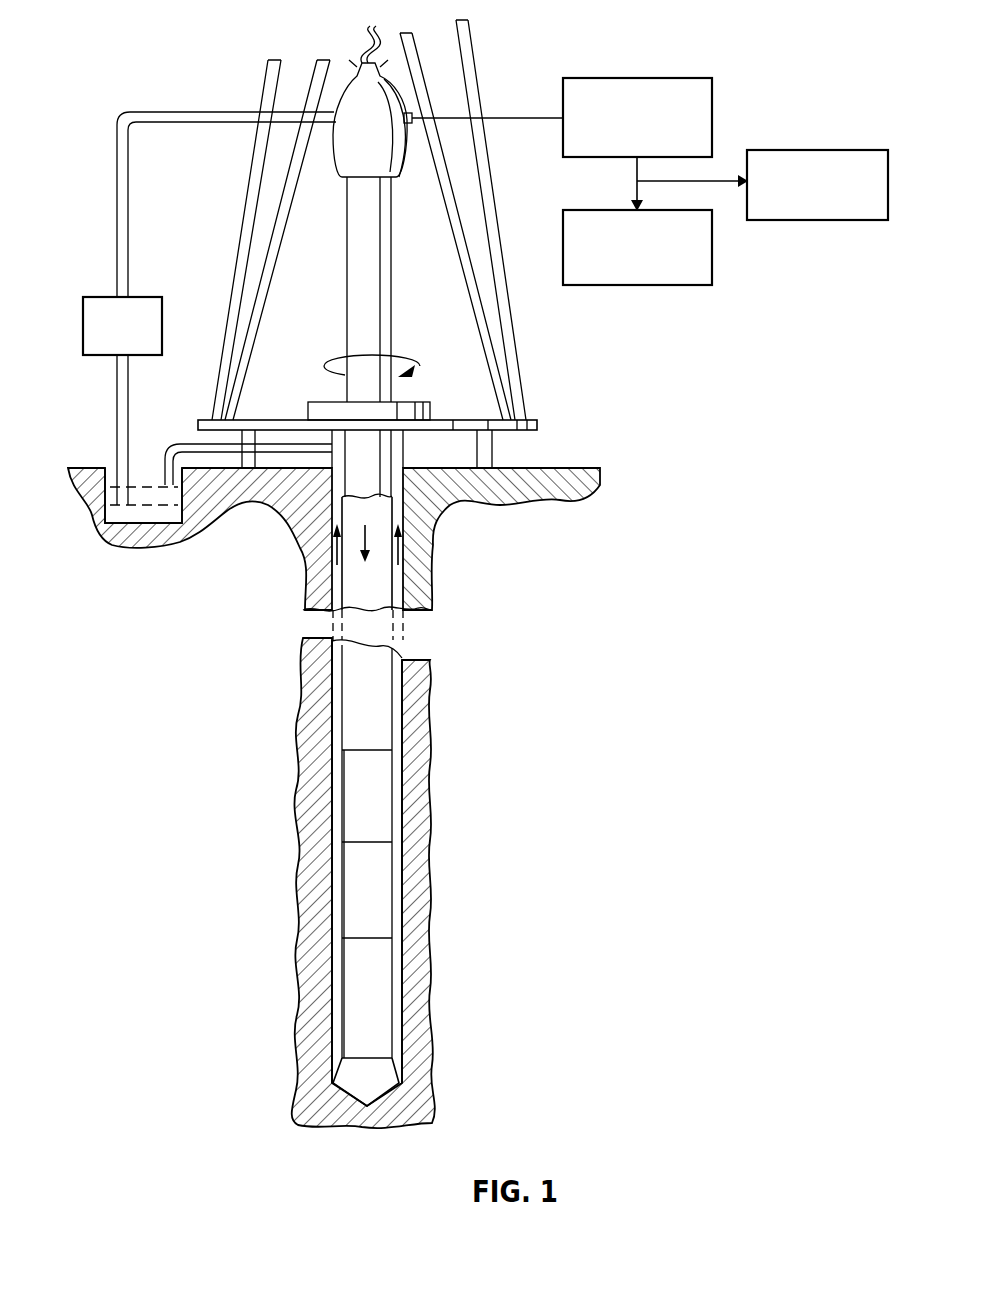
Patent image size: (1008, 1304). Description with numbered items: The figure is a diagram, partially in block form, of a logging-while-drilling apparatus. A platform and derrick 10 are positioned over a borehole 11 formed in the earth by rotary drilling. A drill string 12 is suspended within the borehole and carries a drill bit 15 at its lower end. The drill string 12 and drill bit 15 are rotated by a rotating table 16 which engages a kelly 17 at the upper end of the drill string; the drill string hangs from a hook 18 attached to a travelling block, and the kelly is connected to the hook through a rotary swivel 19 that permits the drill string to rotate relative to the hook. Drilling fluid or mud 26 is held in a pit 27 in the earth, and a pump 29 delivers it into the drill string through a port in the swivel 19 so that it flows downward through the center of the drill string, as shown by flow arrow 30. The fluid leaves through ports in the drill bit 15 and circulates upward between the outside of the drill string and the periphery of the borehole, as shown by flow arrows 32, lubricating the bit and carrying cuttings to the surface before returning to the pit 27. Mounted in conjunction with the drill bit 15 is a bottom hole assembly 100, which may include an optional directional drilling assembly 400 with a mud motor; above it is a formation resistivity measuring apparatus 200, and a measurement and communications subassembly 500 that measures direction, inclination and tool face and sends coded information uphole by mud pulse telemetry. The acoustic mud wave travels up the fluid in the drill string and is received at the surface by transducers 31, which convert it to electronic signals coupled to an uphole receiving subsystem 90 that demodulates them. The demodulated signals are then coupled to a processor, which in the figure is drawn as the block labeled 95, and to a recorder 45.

The platform and derrick 10 is at (549, 424).
The borehole 11 is at (425, 688).
The drill string 12 is at (378, 726).
The drill bit 15 is at (378, 1088).
The rotating table 16 is at (437, 402).
The kelly 17 is at (393, 268).
The hook 18 is at (370, 28).
The rotary swivel 19 is at (338, 165).
The drilling fluid or mud 26 is at (148, 527).
The pit 27 is at (90, 512).
The pump 29 is at (164, 327).
The flow arrow 30 is at (395, 592).
The transducers 31 is at (400, 118).
The flow arrows 32 is at (324, 548).
The recorder 45 is at (786, 150).
The uphole receiving subsystem 90 is at (638, 78).
The processor 95 is at (655, 285).
The bottom hole assembly 100 is at (283, 794).
The formation resistivity measuring apparatus 200 is at (370, 886).
The directional drilling assembly 400 is at (377, 992).
The measurement and communications subassembly 500 is at (375, 796).